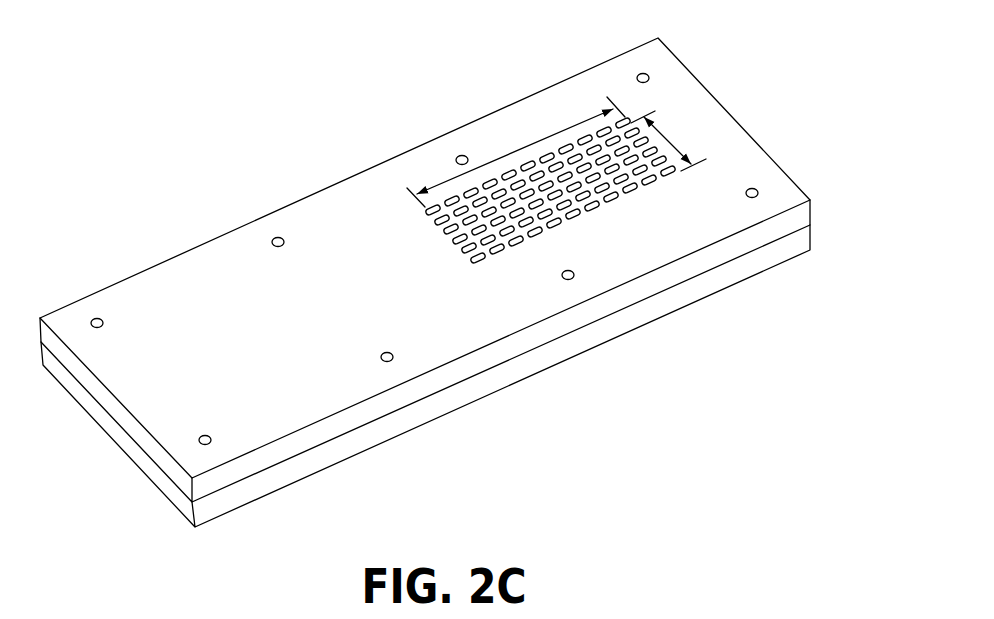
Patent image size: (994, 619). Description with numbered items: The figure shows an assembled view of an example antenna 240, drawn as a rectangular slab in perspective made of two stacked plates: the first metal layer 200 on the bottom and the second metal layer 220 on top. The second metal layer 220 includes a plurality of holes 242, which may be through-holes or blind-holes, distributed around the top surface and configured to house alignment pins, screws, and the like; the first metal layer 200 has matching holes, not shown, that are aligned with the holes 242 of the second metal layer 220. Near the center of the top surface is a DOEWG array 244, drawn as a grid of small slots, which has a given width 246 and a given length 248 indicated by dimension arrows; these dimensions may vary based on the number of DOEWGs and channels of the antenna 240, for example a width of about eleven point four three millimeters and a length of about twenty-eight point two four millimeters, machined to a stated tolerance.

The first metal layer 200 is at (167, 487).
The second metal layer 220 is at (158, 453).
The antenna 240 is at (208, 121).
The holes 242 is at (101, 319).
The DOEWG array 244 is at (554, 198).
The width 246 is at (667, 137).
The length 248 is at (517, 150).